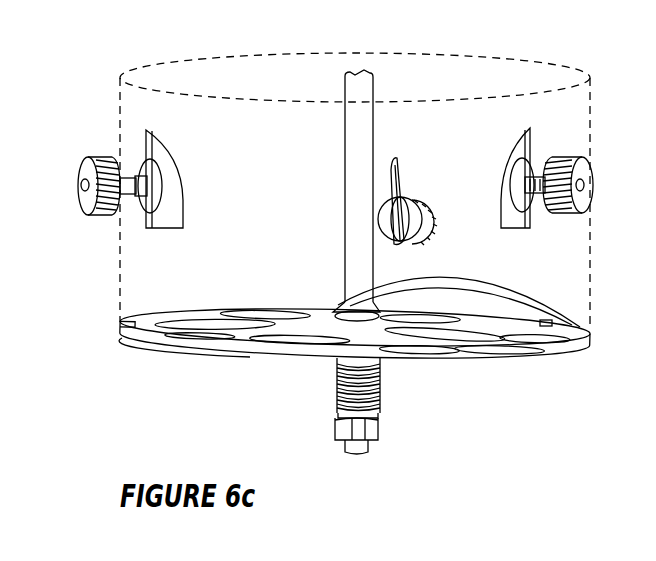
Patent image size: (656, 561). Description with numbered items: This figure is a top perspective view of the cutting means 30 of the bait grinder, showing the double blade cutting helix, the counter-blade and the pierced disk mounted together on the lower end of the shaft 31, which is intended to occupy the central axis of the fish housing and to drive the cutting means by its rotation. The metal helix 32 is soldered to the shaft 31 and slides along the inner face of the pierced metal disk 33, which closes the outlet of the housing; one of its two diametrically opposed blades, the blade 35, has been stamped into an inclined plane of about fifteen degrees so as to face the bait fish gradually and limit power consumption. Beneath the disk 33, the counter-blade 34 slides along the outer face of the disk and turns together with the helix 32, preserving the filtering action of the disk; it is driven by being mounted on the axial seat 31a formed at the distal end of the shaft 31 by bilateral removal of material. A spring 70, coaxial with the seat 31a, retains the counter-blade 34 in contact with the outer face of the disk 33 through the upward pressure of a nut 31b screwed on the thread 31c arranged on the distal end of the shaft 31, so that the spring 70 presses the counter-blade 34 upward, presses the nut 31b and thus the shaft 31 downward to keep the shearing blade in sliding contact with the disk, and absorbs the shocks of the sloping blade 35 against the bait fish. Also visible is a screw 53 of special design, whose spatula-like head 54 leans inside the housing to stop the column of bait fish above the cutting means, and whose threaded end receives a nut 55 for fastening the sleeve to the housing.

The cutting means 30 is at (327, 232).
The shaft 31 is at (356, 133).
The axial seat 31a is at (375, 414).
The nut 31b is at (335, 424).
The thread 31c is at (370, 447).
The helix 32 is at (334, 300).
The pierced disk 33 is at (172, 352).
The counter-blade 34 is at (145, 345).
The blade 35 is at (450, 300).
The screw 53 is at (133, 150).
The head 54 is at (168, 172).
The nut 55 is at (80, 176).
The spring 70 is at (386, 393).